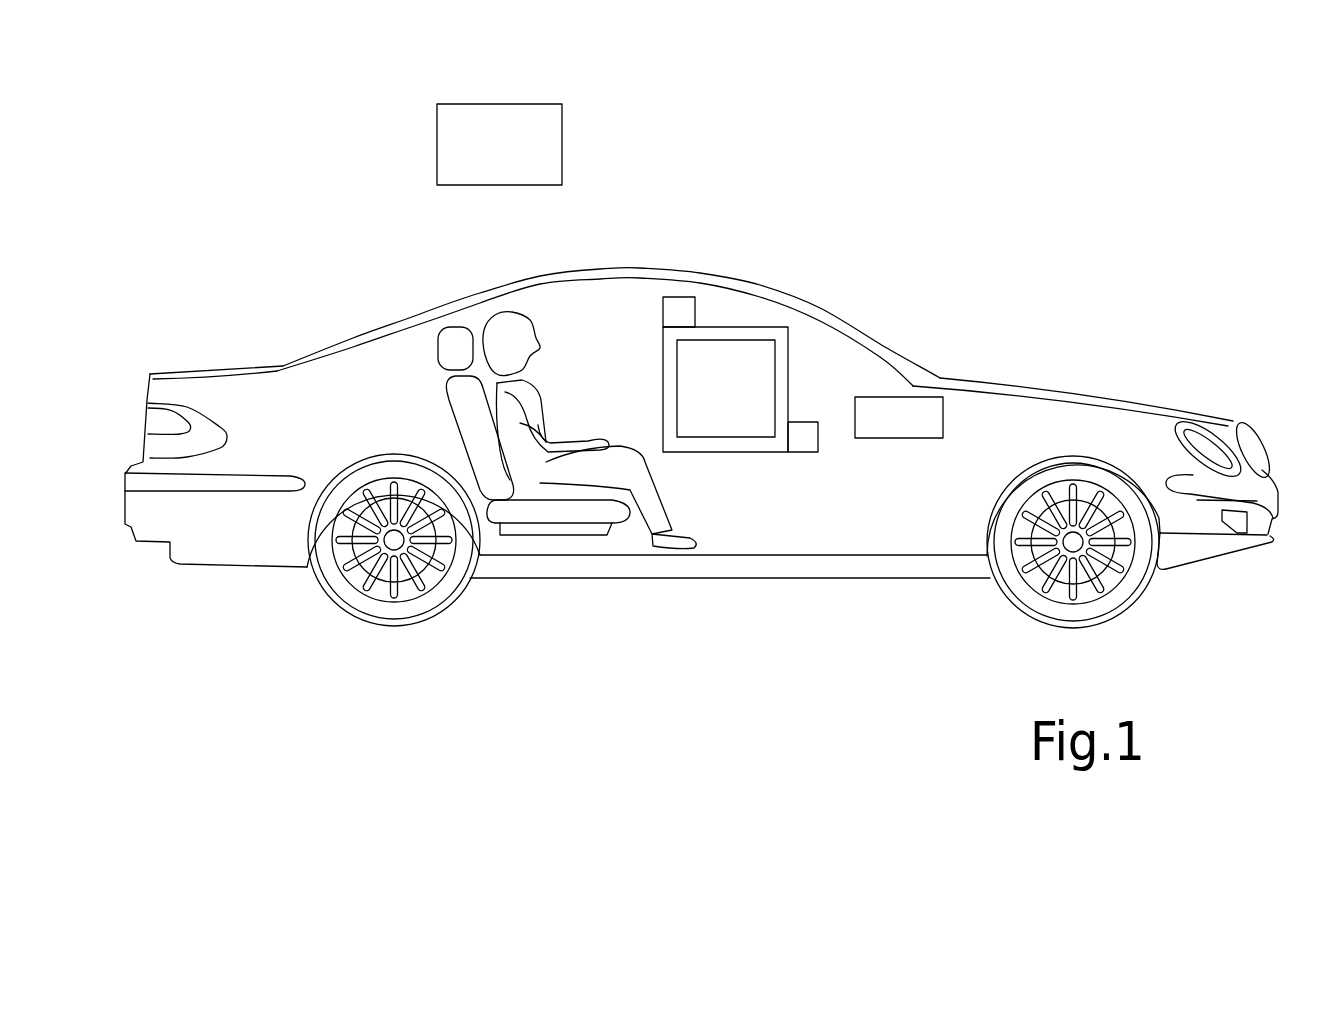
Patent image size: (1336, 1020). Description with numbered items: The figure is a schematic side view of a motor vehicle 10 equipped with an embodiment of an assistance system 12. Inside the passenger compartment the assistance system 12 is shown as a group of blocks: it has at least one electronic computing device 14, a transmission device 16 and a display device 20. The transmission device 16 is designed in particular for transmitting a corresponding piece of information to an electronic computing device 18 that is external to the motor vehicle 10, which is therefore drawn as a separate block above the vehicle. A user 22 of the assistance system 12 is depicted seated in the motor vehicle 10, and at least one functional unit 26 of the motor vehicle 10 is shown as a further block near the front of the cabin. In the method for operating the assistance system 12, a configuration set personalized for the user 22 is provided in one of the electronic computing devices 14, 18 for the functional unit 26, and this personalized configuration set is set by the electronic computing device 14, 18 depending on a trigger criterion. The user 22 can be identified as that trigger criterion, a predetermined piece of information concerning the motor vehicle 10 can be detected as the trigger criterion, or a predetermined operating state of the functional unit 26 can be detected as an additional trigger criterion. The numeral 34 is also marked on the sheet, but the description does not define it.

The motor vehicle 10 is at (1153, 402).
The assistance system 12 is at (788, 371).
The electronic computing device 14 is at (759, 340).
The transmission device 16 is at (680, 297).
The electronic computing device external to the motor vehicle 18 is at (562, 134).
The display device 20 is at (806, 453).
The user 22 is at (498, 327).
The functional unit 26 is at (920, 407).
The vehicle surroundings 34 is at (1184, 242).